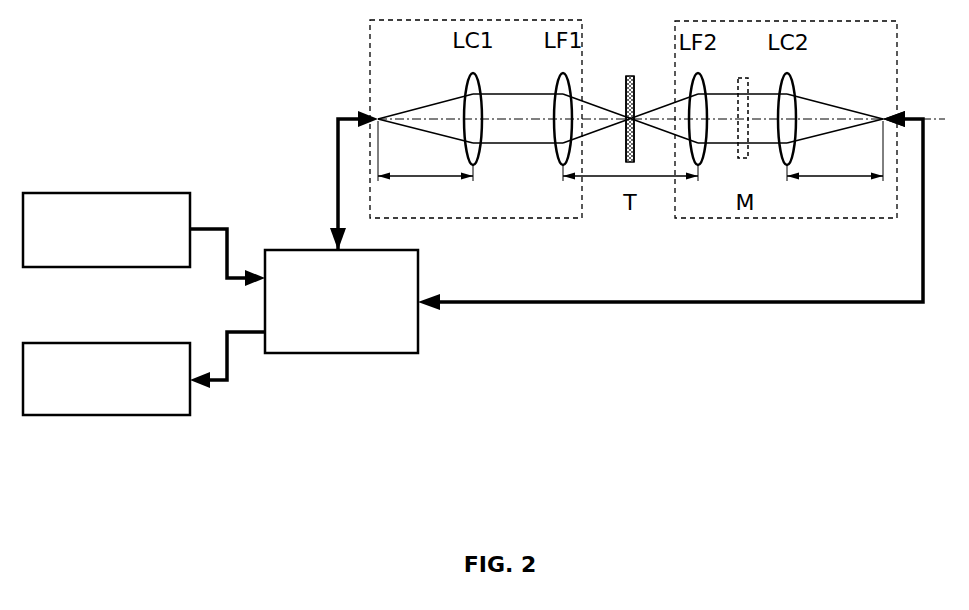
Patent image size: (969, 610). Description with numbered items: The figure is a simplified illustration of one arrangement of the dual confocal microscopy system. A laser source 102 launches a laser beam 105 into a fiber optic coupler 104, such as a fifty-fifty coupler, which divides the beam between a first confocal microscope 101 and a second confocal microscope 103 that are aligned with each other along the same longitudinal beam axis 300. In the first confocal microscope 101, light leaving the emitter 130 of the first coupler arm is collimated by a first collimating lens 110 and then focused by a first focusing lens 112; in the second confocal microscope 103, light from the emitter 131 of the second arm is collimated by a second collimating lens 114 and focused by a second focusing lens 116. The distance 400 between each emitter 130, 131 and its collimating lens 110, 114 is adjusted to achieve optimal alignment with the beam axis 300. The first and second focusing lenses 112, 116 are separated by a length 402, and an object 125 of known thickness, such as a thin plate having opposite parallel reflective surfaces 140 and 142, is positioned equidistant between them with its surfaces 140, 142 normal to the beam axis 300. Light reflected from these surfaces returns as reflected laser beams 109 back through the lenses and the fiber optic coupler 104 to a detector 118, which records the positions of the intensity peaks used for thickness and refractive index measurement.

The first confocal microscope 101 is at (485, 218).
The second confocal microscope 103 is at (783, 218).
The first collimating lens 110 is at (465, 89).
The first focusing lens 112 is at (553, 90).
The second focusing lens 116 is at (703, 85).
The second collimating lens 114 is at (792, 85).
The object 125 is at (631, 75).
The left reflective surface 140 is at (626, 95).
The right reflective surface 142 is at (635, 95).
The distance 400 is at (423, 178).
The length 402 is at (618, 178).
The emitter of the first arm 130 is at (367, 111).
The emitter of the second arm 131 is at (889, 112).
The beam axis 300 is at (933, 115).
The laser source 102 is at (110, 193).
The detector 118 is at (112, 343).
The fiber optic coupler 104 is at (340, 353).
The laser beam 105 is at (213, 227).
The reflected laser beams 109 is at (210, 383).